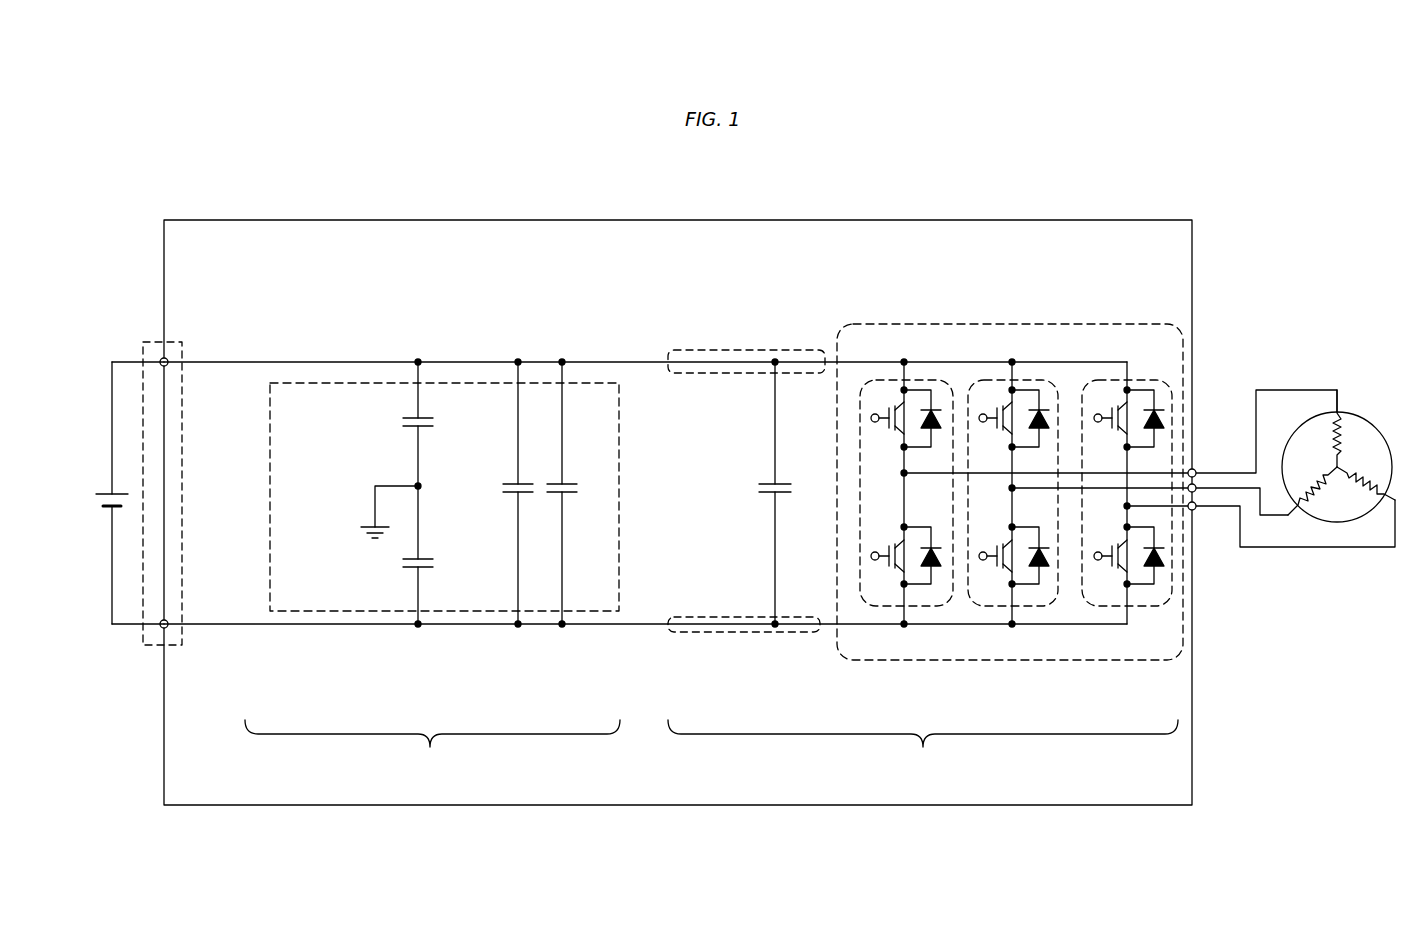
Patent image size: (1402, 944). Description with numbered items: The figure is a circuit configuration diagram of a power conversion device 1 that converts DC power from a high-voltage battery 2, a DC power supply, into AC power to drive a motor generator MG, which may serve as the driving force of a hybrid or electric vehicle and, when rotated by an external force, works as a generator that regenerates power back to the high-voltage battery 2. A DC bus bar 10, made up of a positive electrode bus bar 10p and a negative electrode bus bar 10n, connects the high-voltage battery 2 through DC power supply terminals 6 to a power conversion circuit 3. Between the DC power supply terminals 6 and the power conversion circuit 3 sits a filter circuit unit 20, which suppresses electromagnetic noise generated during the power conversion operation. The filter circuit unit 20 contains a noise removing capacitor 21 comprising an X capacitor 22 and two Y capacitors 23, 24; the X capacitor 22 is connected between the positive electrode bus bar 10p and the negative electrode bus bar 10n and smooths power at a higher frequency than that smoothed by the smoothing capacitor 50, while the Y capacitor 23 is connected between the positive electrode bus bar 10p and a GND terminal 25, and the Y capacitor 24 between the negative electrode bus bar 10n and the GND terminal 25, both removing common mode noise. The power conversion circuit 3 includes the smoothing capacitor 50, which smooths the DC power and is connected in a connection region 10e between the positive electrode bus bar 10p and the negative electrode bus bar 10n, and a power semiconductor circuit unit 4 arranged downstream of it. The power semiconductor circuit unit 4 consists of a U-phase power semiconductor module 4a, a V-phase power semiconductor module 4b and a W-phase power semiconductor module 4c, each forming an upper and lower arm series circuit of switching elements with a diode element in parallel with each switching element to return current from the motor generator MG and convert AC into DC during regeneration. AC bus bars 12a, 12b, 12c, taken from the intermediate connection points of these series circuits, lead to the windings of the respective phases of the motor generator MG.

The power conversion device 1 is at (620, 219).
The high-voltage battery 2 is at (110, 508).
The power conversion circuit 3 is at (915, 791).
The power semiconductor circuit unit 4 is at (900, 339).
The U-phase power semiconductor module 4a is at (925, 380).
The V-phase power semiconductor module 4b is at (1025, 382).
The W-phase power semiconductor module 4c is at (1135, 380).
The DC power supply terminals 6 is at (147, 641).
The DC bus bar 10 is at (241, 365).
The positive electrode bus bar 10p is at (406, 360).
The negative electrode bus bar 10n is at (393, 628).
The connection region 10e is at (768, 350).
The AC bus bar 12a is at (1198, 516).
The AC bus bar 12b is at (1150, 499).
The AC bus bar 12c is at (1261, 523).
The filter circuit unit 20 is at (421, 791).
The noise removing capacitor 21 is at (623, 498).
The X capacitor 22 is at (543, 470).
The Y capacitor 23 is at (403, 421).
The Y capacitor 24 is at (397, 561).
The GND terminal 25 is at (366, 513).
The smoothing capacitor 50 is at (768, 478).
The motor generator MG is at (1356, 412).